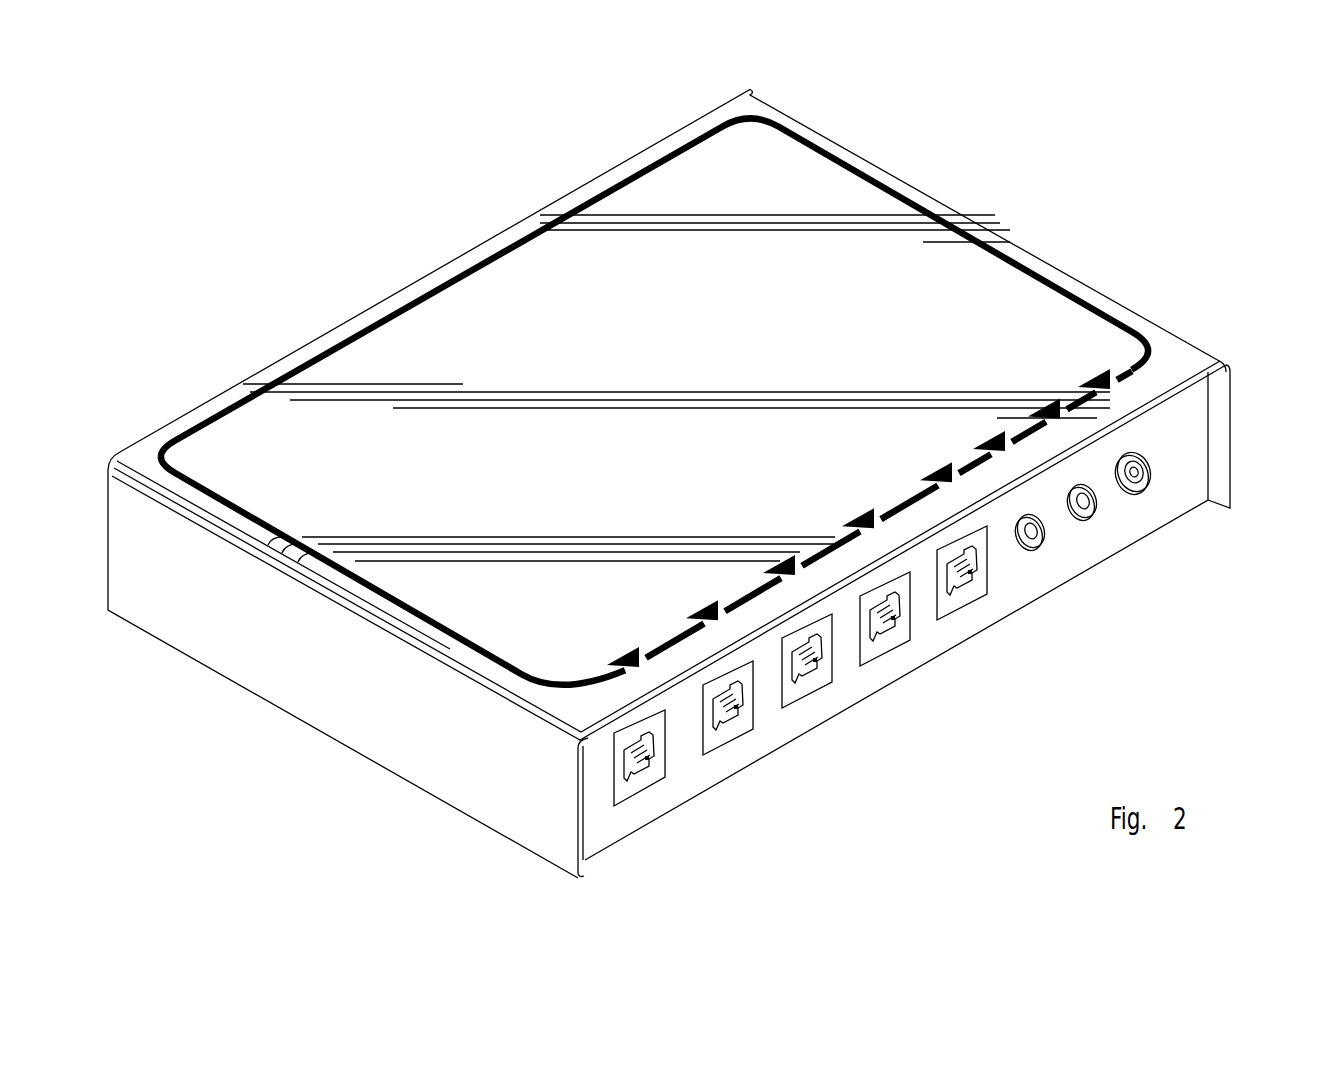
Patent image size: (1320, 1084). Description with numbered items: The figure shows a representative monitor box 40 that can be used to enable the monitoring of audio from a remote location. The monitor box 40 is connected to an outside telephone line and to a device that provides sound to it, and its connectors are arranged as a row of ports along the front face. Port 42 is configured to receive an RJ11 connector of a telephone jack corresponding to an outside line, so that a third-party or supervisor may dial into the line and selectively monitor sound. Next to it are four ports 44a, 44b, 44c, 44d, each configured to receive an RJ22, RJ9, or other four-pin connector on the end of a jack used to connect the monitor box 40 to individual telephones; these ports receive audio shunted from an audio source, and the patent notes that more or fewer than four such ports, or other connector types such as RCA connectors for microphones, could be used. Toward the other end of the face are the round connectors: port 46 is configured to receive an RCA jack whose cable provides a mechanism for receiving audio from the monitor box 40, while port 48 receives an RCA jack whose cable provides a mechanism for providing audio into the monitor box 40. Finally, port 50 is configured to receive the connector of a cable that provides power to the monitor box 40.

The monitor box 40 is at (440, 322).
The port 42 is at (650, 764).
The port 44a is at (738, 714).
The port 44b is at (815, 667).
The port 44c is at (893, 625).
The port 44d is at (970, 579).
The port 46 is at (1036, 540).
The port 48 is at (1090, 510).
The port 50 is at (1143, 468).